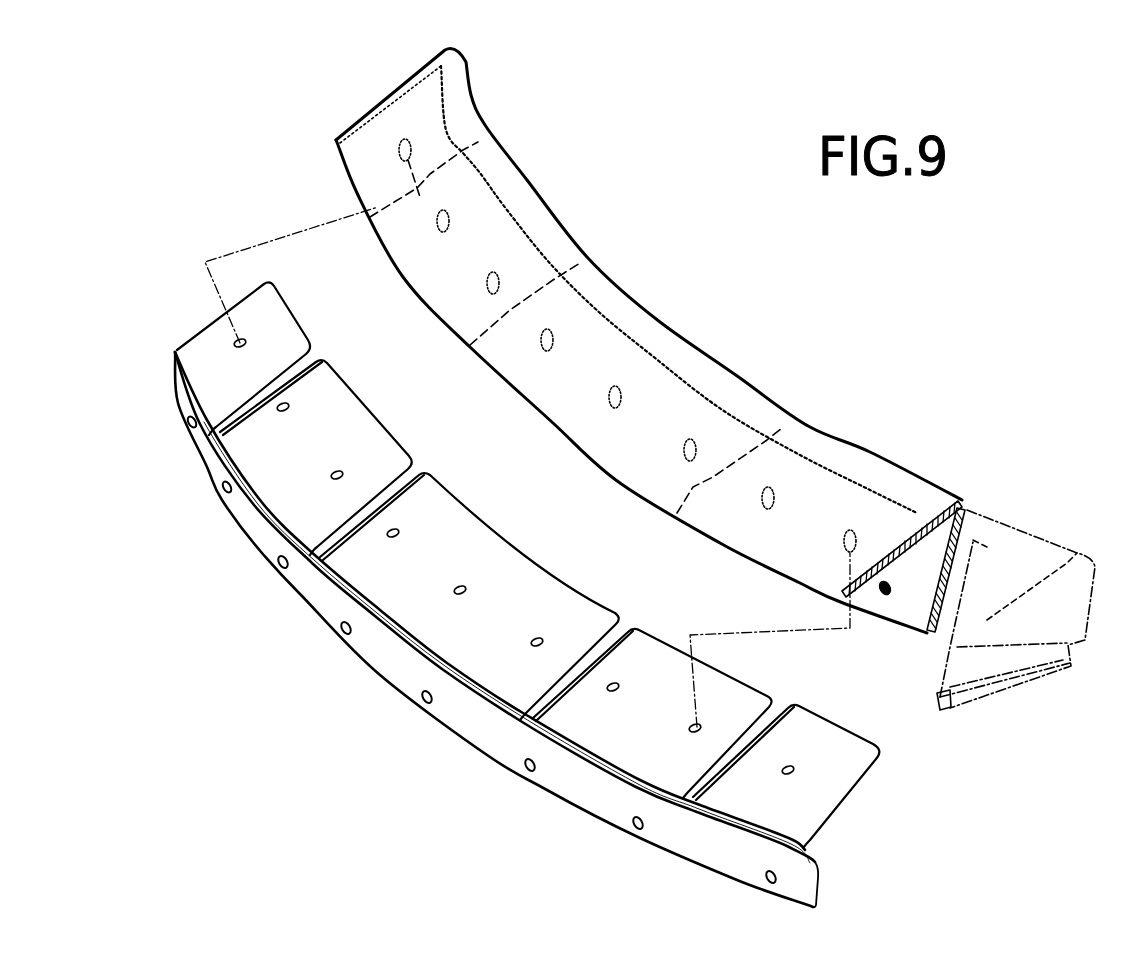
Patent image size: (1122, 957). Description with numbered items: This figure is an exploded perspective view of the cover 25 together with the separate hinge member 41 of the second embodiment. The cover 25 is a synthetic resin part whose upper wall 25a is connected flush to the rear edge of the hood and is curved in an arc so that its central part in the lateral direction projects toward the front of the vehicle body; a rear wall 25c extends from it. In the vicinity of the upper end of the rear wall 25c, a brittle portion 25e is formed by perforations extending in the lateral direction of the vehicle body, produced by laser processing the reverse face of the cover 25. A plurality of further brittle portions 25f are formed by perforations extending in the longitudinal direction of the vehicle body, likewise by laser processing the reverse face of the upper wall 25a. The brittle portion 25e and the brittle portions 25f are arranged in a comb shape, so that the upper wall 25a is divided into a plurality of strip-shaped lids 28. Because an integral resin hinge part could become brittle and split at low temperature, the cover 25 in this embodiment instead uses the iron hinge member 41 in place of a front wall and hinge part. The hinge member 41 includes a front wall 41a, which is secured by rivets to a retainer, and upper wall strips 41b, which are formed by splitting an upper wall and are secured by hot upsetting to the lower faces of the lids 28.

The cover 25 is at (703, 315).
The upper wall 25a is at (903, 537).
The rear wall 25c is at (982, 555).
The brittle portion 25e is at (727, 410).
The brittle portions 25f is at (372, 112).
The strip-shaped lids 28 is at (437, 127).
The hinge member 41 is at (374, 669).
The front wall 41a is at (308, 597).
The upper wall strips 41b is at (283, 327).